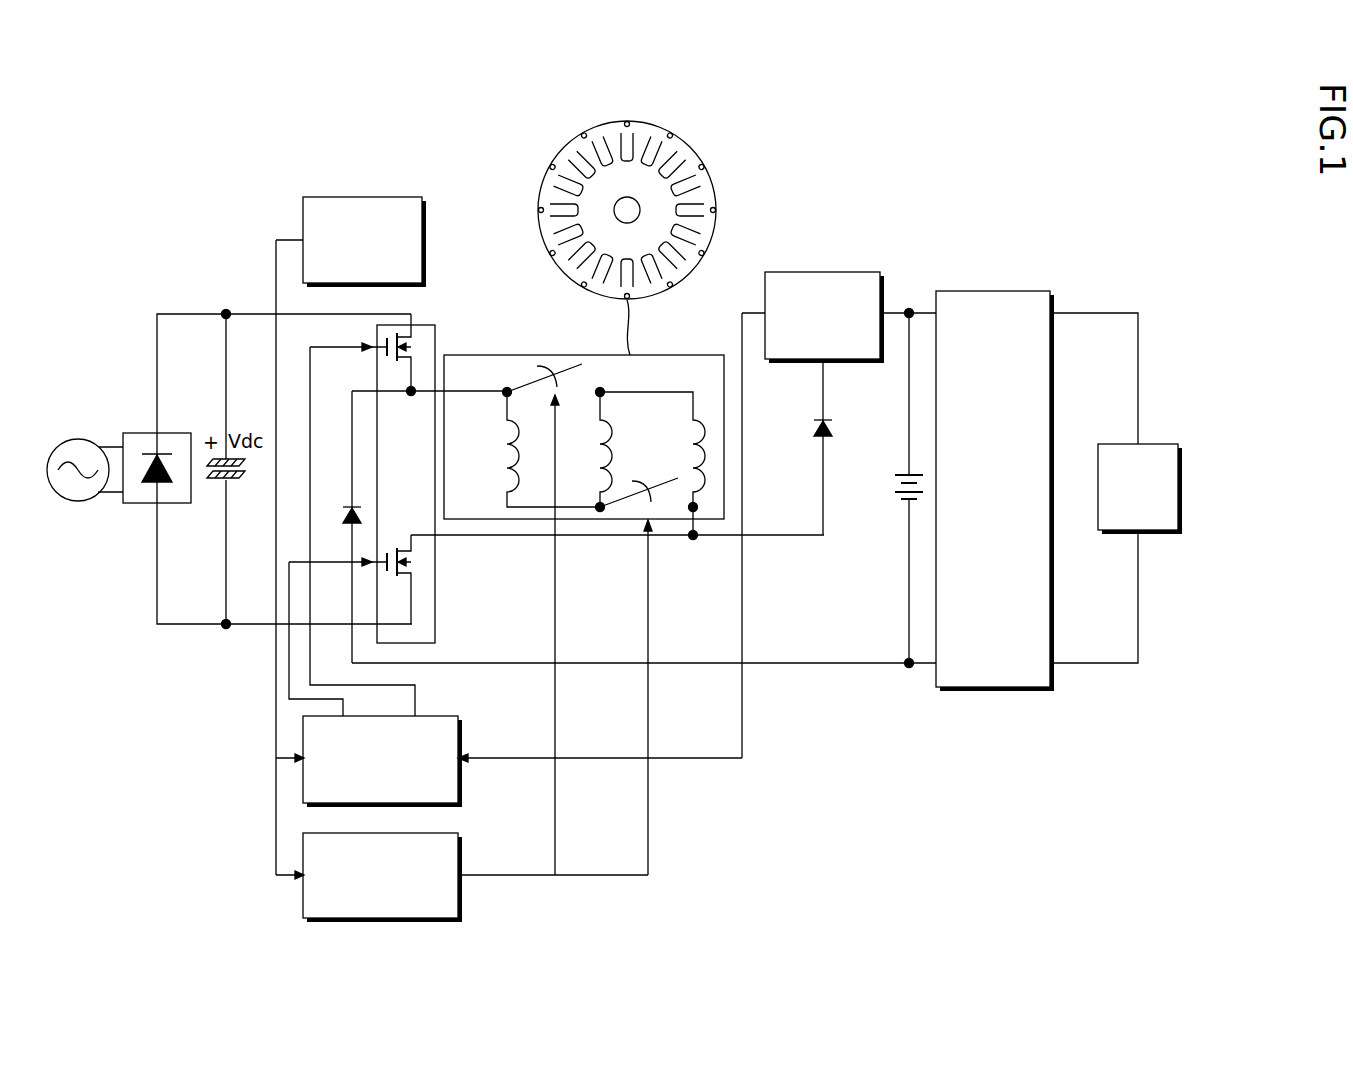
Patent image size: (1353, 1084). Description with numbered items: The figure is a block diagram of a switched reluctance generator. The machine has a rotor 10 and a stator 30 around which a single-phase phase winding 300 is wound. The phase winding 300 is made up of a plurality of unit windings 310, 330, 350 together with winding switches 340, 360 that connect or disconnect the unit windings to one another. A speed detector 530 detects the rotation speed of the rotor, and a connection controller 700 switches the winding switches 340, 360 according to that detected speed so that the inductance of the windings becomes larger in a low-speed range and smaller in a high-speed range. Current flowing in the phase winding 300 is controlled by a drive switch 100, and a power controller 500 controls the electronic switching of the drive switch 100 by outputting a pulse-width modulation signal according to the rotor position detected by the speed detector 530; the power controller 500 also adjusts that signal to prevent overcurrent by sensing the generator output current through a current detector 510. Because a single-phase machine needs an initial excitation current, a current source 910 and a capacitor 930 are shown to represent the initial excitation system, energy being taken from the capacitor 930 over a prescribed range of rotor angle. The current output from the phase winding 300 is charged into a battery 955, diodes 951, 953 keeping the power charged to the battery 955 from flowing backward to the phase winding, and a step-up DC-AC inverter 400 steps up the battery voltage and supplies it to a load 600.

The rotor 10 is at (626, 164).
The stator 30 is at (541, 178).
The drive switch 100 is at (398, 478).
The phase winding 300 is at (584, 576).
The unit winding 310 is at (526, 449).
The unit winding 330 is at (570, 449).
The winding switch 340 is at (526, 617).
The unit winding 350 is at (652, 463).
The winding switch 360 is at (639, 665).
The step-up DC-AC inverter 400 is at (994, 490).
The power controller 500 is at (522, 760).
The current detector 510 is at (839, 316).
The speed detector 530 is at (363, 241).
The load 600 is at (1115, 488).
The connection controller 700 is at (475, 876).
The current source 910 is at (138, 432).
The capacitor 930 is at (222, 484).
The diode 951 is at (349, 506).
The diode 953 is at (818, 424).
The battery 955 is at (902, 474).